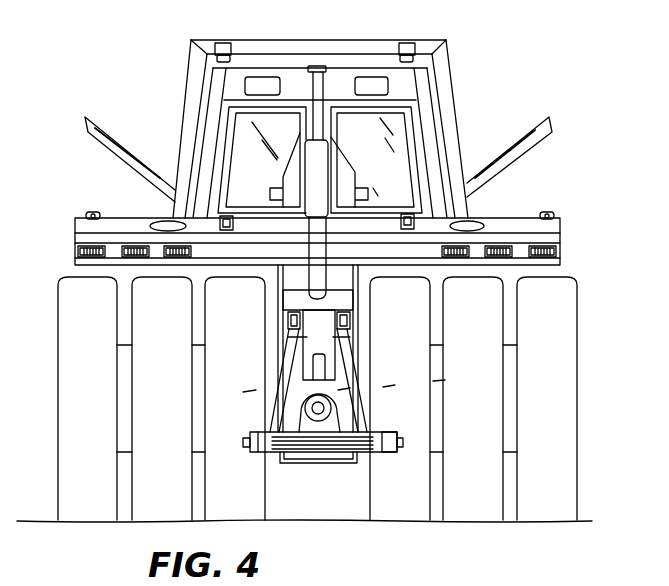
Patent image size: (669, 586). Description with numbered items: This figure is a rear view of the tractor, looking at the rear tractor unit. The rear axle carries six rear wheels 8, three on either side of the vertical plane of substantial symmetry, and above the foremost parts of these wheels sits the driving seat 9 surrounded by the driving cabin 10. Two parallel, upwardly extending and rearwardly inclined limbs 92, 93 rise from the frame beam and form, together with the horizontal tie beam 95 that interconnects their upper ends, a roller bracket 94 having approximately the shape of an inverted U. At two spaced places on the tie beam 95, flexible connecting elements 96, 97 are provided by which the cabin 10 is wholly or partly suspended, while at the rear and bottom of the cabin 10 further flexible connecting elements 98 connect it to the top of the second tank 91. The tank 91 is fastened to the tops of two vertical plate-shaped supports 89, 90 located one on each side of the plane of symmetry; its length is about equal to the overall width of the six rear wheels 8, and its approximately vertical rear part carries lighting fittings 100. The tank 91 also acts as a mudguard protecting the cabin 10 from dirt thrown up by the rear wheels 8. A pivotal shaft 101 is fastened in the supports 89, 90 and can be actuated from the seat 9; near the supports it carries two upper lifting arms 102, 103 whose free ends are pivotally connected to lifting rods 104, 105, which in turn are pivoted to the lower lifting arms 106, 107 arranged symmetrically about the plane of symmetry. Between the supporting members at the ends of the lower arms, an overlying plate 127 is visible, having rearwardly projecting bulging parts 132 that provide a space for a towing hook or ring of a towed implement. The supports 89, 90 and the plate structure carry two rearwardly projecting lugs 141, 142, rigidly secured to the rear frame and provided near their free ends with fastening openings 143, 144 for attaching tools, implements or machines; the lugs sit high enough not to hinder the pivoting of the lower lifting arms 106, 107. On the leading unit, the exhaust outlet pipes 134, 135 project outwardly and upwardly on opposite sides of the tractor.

The rear wheels 8 is at (72, 310).
The driving seat 9 is at (343, 162).
The driving cabin 10 is at (424, 100).
The vertical plate-shaped support 89 is at (277, 270).
The vertical plate-shaped support 90 is at (375, 270).
The second tank 91 is at (563, 218).
The inclined limb 92 is at (187, 90).
The inclined limb 93 is at (449, 112).
The roller bracket 94 is at (323, 25).
The horizontal tie beam 95 is at (351, 43).
The flexible connecting element 96 is at (223, 43).
The flexible connecting element 97 is at (407, 43).
The further flexible connecting elements 98 is at (253, 213).
The lighting fittings 100 is at (78, 250).
The pivotal shaft 101 is at (292, 312).
The upper lifting arm 102 is at (283, 303).
The upper lifting arm 103 is at (350, 307).
The lifting rod 104 is at (303, 363).
The lifting rod 105 is at (343, 357).
The lower lifting arm 106 is at (256, 430).
The lower lifting arm 107 is at (417, 410).
The plate 127 is at (373, 455).
The bulging parts 132 is at (322, 452).
The outlet pipe 134 is at (92, 135).
The outlet pipe 135 is at (552, 128).
The rearwardly projecting lug 141 is at (300, 333).
The rearwardly projecting lug 142 is at (347, 335).
The fastening opening 143 is at (256, 393).
The fastening opening 144 is at (437, 383).